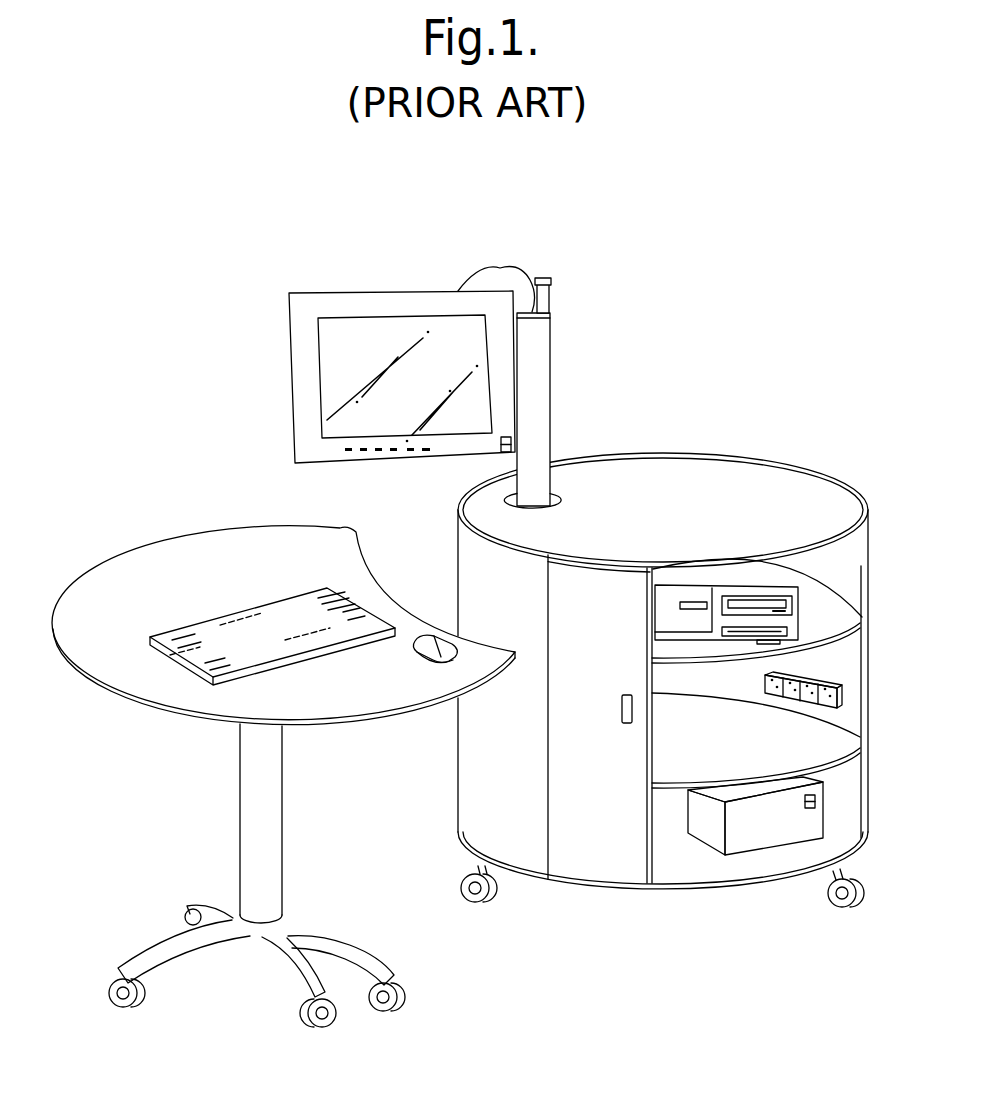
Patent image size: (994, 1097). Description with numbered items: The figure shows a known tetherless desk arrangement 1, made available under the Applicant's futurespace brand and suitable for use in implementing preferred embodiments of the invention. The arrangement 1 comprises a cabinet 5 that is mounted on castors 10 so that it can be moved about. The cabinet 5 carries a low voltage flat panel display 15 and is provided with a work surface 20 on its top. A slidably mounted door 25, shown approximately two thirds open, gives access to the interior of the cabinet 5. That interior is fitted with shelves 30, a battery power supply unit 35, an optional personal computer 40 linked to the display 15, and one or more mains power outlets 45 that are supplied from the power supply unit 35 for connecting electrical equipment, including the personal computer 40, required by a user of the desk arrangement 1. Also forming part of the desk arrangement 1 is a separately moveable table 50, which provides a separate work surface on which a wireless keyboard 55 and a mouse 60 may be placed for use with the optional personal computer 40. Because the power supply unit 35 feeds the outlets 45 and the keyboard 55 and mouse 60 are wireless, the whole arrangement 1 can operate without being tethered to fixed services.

The tetherless desk arrangement 1 is at (161, 358).
The cabinet 5 is at (729, 455).
The castors 10 is at (462, 887).
The low voltage flat panel display 15 is at (352, 292).
The work surface 20 is at (838, 503).
The slidably mounted door 25 is at (619, 867).
The shelves 30 is at (845, 622).
The battery power supply unit 35 is at (713, 840).
The personal computer 40 is at (740, 588).
The mains power outlets 45 is at (772, 695).
The table 50 is at (98, 590).
The wireless keyboard 55 is at (235, 610).
The mouse 60 is at (417, 658).